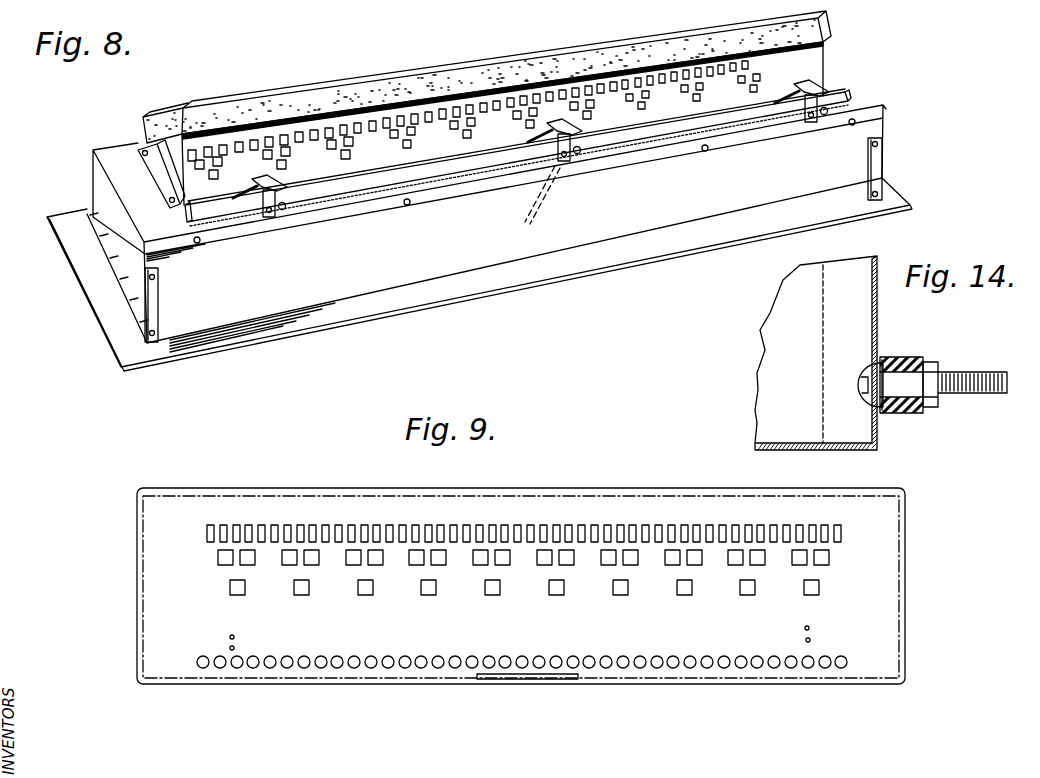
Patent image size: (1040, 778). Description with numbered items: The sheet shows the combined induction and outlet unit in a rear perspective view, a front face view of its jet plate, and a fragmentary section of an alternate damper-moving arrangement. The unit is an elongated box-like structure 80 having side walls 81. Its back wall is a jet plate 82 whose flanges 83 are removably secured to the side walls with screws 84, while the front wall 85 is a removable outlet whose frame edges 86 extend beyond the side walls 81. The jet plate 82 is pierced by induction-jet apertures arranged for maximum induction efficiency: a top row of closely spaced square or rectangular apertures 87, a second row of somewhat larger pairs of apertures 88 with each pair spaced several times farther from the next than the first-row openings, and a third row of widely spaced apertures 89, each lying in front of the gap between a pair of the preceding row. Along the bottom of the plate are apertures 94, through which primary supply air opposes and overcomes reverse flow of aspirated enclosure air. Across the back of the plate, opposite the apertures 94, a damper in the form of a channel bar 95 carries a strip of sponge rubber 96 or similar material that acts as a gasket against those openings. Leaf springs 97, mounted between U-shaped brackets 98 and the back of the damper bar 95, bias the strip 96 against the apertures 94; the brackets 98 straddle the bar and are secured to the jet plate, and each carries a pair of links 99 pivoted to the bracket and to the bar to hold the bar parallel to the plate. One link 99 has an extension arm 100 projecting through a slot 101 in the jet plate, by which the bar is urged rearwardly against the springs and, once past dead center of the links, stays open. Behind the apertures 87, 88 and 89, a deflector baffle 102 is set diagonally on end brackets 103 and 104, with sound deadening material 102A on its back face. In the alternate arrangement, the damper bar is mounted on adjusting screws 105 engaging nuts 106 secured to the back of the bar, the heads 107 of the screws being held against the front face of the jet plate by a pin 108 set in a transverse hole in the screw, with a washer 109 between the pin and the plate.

In FIG. 8, the box-like structure 80 is at (889, 127).
In FIG. 8, the side walls 81 is at (170, 325).
In FIG. 8, the jet plate 82 is at (536, 141).
In FIG. 14, the jet plate 82 is at (872, 290).
In FIG. 9, the jet plate 82 is at (145, 527).
In FIG. 8, the flanges 83 is at (125, 212).
In FIG. 8, the screws 84 is at (197, 244).
In FIG. 8, the front wall 85 is at (438, 305).
In FIG. 8, the frame edges 86 is at (92, 280).
In FIG. 8, the apertures 87 is at (757, 61).
In FIG. 9, the apertures 87 is at (290, 525).
In FIG. 8, the pairs of apertures 88 is at (762, 75).
In FIG. 9, the pairs of apertures 88 is at (240, 567).
In FIG. 8, the apertures 89 is at (760, 88).
In FIG. 9, the apertures 89 is at (297, 593).
In FIG. 9, the apertures 94 is at (387, 670).
In FIG. 8, the channel bar 95 is at (350, 188).
In FIG. 14, the channel bar 95 is at (900, 357).
In FIG. 14, the strip of sponge rubber 96 is at (883, 360).
In FIG. 8, the leaf springs 97 is at (543, 132).
In FIG. 8, the U-shaped brackets 98 is at (273, 210).
In FIG. 8, the links 99 is at (286, 208).
In FIG. 8, the extension arm 100 is at (530, 221).
In FIG. 9, the slot 101 is at (542, 680).
In FIG. 8, the deflector baffle 102 is at (255, 124).
In FIG. 8, the sound deadening material 102A is at (340, 92).
In FIG. 8, the bracket 103 is at (167, 150).
In FIG. 8, the bracket 104 is at (823, 43).
In FIG. 14, the adjusting screws 105 is at (993, 372).
In FIG. 14, the nuts 106 is at (933, 363).
In FIG. 14, the heads 107 is at (865, 389).
In FIG. 14, the pin 108 is at (900, 410).
In FIG. 14, the washer 109 is at (876, 405).